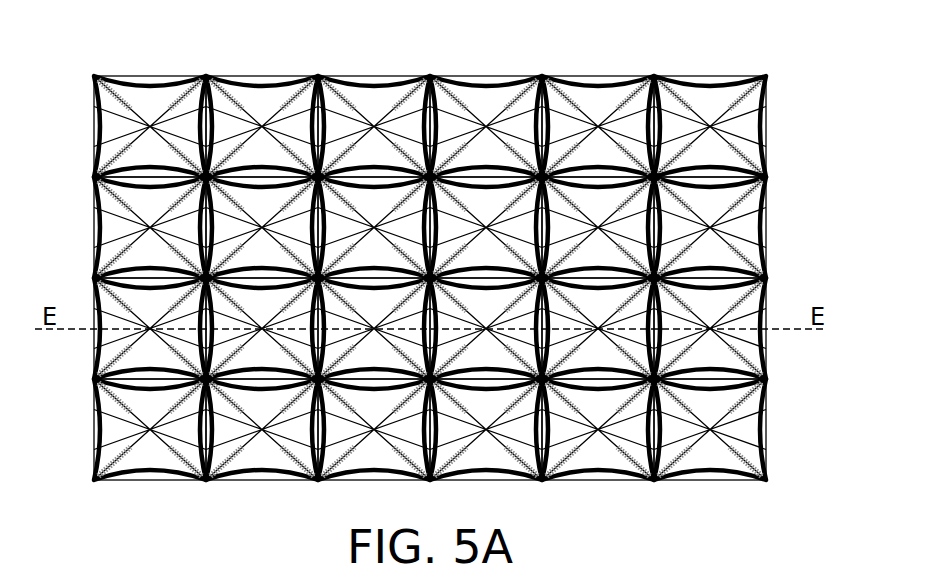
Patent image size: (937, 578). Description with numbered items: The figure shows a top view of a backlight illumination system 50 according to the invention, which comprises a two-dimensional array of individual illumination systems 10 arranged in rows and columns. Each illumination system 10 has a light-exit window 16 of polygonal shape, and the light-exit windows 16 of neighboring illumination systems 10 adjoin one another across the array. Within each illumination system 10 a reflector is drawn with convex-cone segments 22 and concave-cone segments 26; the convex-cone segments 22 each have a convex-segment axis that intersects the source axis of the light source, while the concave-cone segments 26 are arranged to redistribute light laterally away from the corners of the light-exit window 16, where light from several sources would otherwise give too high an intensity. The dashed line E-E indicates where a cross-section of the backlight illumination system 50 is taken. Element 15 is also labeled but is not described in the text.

The illumination system 10 is at (85, 98).
The backlight illumination system 50 is at (818, 28).
The convex-cone segment 22 is at (706, 97).
The concave-cone segment 26 is at (747, 97).
The light-exit window 16 is at (763, 128).
The side brace 15 is at (765, 153).